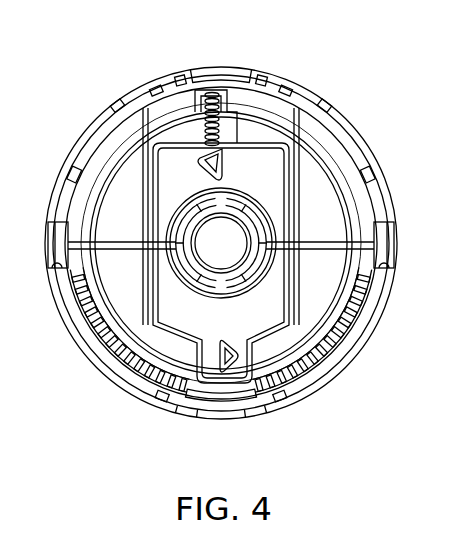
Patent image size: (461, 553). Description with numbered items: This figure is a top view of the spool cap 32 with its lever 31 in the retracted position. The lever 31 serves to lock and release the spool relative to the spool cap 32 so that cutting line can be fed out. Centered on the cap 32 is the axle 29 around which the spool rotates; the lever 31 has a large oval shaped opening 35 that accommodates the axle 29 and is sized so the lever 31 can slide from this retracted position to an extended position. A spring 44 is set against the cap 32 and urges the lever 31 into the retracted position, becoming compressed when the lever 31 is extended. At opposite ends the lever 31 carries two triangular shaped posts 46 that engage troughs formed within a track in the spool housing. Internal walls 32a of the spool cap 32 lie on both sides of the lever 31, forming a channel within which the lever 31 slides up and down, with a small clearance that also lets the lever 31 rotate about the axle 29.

The axle 29 is at (243, 277).
The lever 31 is at (170, 182).
The spool cap 32 is at (327, 97).
The internal walls 32a is at (140, 229).
The large oval shaped opening 35 is at (188, 305).
The spring 44 is at (204, 120).
The triangular shaped posts 46 is at (208, 150).